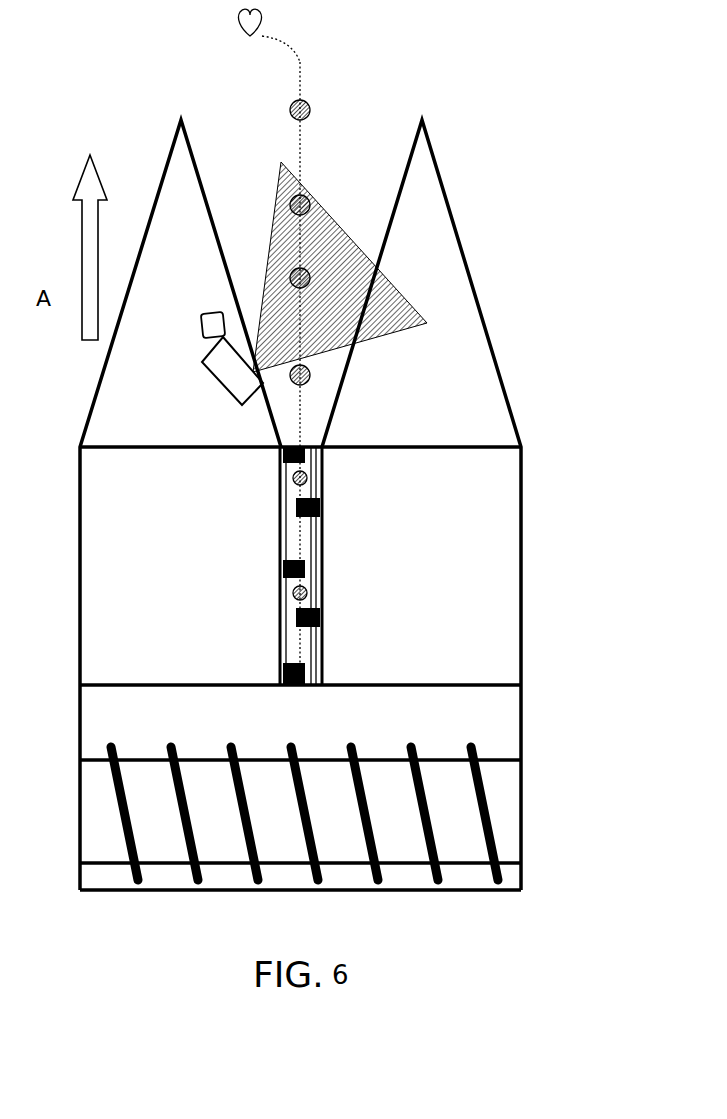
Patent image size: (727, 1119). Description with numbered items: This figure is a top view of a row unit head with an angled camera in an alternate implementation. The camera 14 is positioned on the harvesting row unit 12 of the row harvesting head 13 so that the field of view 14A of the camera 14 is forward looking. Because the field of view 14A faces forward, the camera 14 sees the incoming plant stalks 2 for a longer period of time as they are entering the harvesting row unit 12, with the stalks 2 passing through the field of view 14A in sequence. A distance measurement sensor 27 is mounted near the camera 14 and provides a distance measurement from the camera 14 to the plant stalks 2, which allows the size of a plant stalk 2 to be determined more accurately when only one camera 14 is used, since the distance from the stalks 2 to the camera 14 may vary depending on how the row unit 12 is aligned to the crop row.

The plant stalk 2 is at (306, 102).
The harvesting row unit 12 is at (93, 597).
The row harvesting head 13 is at (522, 800).
The camera 14 is at (225, 384).
The field of view 14A is at (345, 212).
The distance sensor 27 is at (202, 322).